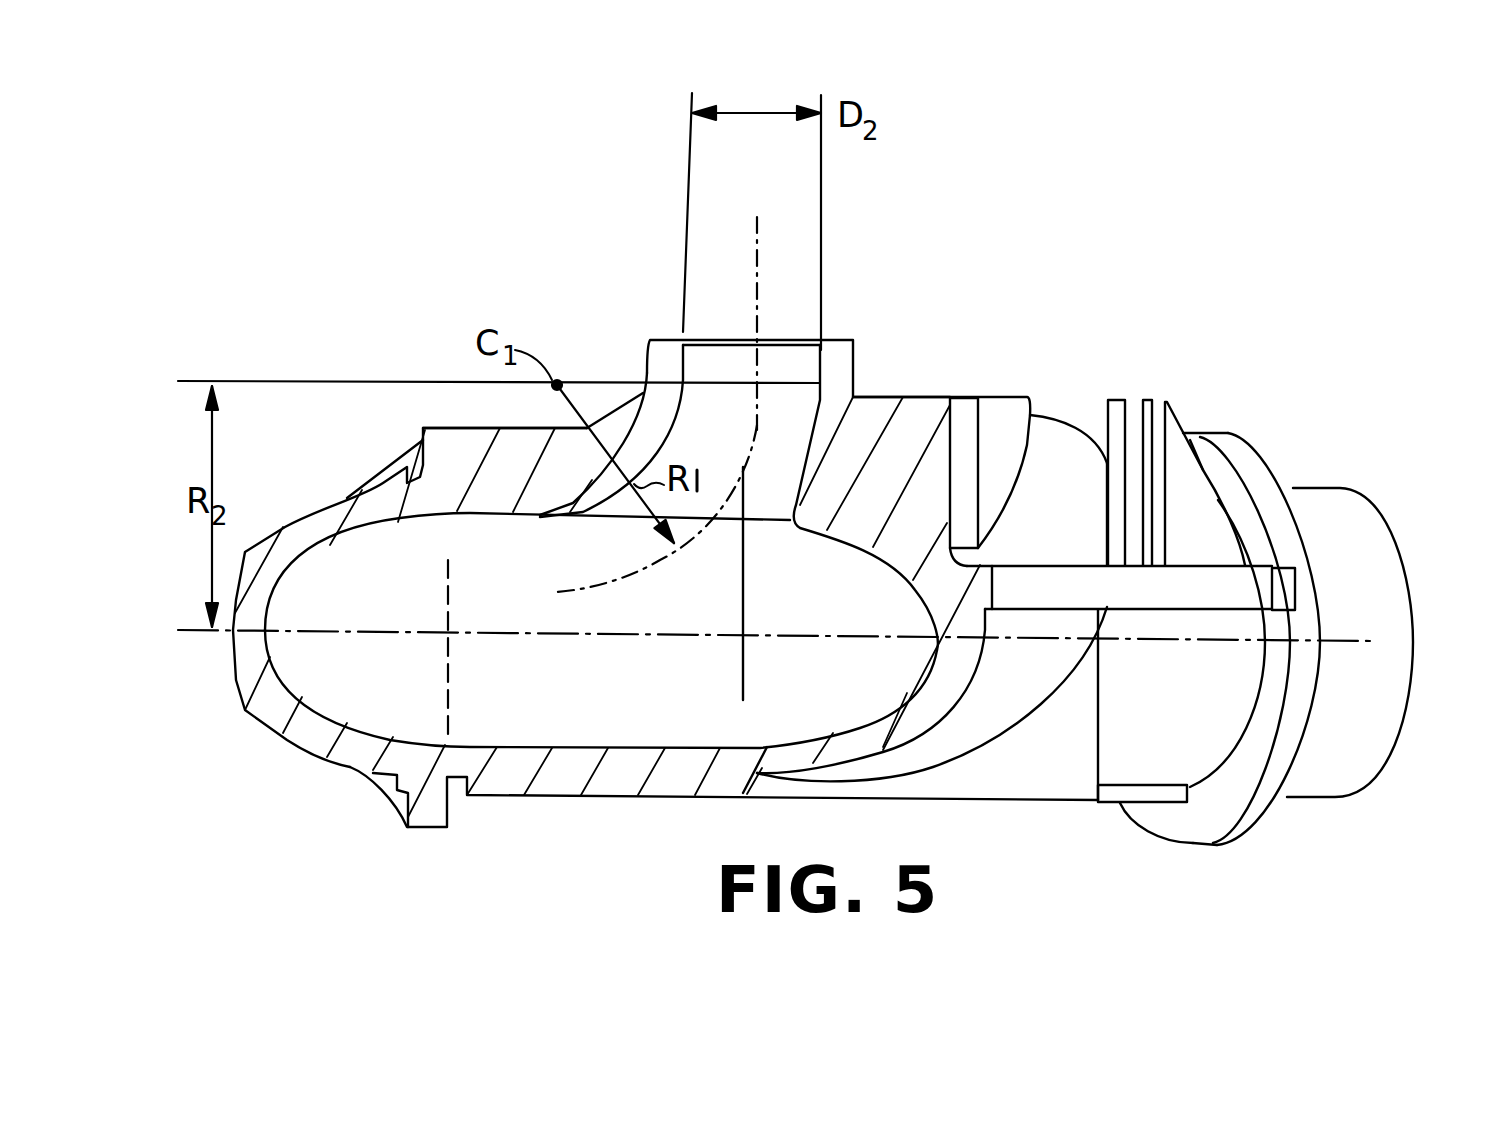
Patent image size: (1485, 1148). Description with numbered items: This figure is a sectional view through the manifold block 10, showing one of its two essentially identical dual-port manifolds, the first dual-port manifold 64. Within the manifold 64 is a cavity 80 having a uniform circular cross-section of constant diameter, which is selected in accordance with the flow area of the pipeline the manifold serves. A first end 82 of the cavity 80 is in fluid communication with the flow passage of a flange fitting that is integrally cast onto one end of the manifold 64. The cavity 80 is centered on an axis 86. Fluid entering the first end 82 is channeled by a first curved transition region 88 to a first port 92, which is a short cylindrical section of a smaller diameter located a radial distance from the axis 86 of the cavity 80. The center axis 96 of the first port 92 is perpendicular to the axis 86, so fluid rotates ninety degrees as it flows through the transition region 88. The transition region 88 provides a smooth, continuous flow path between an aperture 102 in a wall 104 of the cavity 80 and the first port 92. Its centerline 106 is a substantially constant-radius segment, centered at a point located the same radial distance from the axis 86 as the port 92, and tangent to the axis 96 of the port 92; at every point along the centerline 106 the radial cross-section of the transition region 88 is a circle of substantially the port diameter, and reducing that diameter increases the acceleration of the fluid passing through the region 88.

The manifold block 10 is at (1362, 134).
The first dual-port manifold 64 is at (527, 758).
The cavity 80 is at (660, 723).
The first end of cavity 82 is at (450, 690).
The axis of cavity 86 is at (190, 632).
The first curved transition region 88 is at (810, 441).
The first port 92 is at (800, 348).
The center axis of first port 96 is at (758, 237).
The aperture 102 is at (731, 505).
The wall of cavity 104 is at (503, 495).
The centerline of first transition region 106 is at (615, 578).